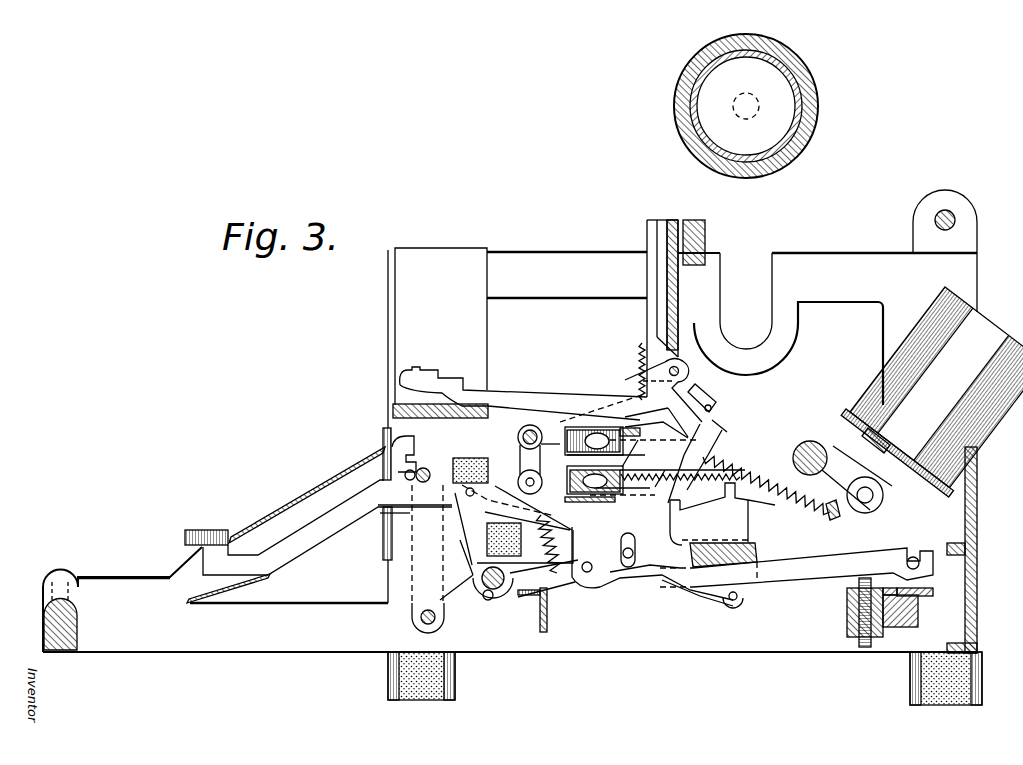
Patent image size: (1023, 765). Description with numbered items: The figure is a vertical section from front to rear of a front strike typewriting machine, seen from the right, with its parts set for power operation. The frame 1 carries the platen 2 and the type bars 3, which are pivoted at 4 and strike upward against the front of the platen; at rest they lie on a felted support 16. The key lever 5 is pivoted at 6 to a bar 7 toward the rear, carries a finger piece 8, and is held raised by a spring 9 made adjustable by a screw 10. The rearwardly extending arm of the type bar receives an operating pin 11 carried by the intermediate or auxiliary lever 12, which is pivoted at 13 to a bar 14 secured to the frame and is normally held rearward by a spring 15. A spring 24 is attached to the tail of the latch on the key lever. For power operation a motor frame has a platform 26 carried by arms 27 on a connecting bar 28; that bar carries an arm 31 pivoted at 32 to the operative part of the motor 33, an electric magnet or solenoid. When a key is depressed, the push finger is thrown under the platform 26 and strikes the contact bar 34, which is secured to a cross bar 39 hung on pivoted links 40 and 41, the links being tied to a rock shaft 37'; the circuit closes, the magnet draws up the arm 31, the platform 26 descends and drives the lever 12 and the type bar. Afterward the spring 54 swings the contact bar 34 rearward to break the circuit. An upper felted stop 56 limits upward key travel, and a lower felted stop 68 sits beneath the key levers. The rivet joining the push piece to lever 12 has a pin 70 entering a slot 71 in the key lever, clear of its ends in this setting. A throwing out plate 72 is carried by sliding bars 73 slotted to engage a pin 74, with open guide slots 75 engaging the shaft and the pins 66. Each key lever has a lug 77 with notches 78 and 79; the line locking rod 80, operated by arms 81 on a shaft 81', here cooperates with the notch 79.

The frame 1 is at (552, 290).
The platen 2 is at (674, 107).
The type bars 3 is at (532, 406).
The pivot 4 is at (681, 371).
The key lever 5 is at (796, 567).
The pivot 6 is at (916, 556).
The bar 7 is at (922, 590).
The finger piece 8 is at (201, 530).
The spring 9 is at (848, 600).
The screw 10 is at (865, 650).
The operating pin 11 is at (713, 405).
The intermediate or auxiliary lever 12 is at (720, 431).
The pivot 13 is at (673, 590).
The bar 14 is at (762, 555).
The spring 15 is at (745, 478).
The felted support 16 is at (393, 412).
The spring 24 is at (545, 542).
The platform 26 is at (640, 365).
The arms 27 is at (783, 440).
The bar 28 is at (816, 444).
The arm 31 is at (858, 476).
The pivot 32 is at (882, 500).
The motor 33 is at (932, 392).
The contact bar 34 is at (628, 492).
The rock shaft 37' is at (514, 426).
The cross bar 39 is at (572, 480).
The link 40 is at (520, 459).
The link 41 is at (583, 454).
The spring 54 is at (660, 492).
The felted stop 56 is at (520, 446).
The inwardly projecting pins 66 is at (490, 600).
The felted stop 68 is at (488, 530).
The pin 70 is at (621, 554).
The slot 71 is at (632, 588).
The throwing out plate 72 is at (540, 610).
The sliding bars 73 is at (603, 590).
The pin 74 is at (736, 606).
The guide slots 75 is at (472, 590).
The lug 77 is at (383, 440).
The notch 78 is at (420, 456).
The notch 79 is at (410, 480).
The line locking rod 80 is at (436, 472).
The arms 81 is at (428, 559).
The shaft 81' is at (392, 625).